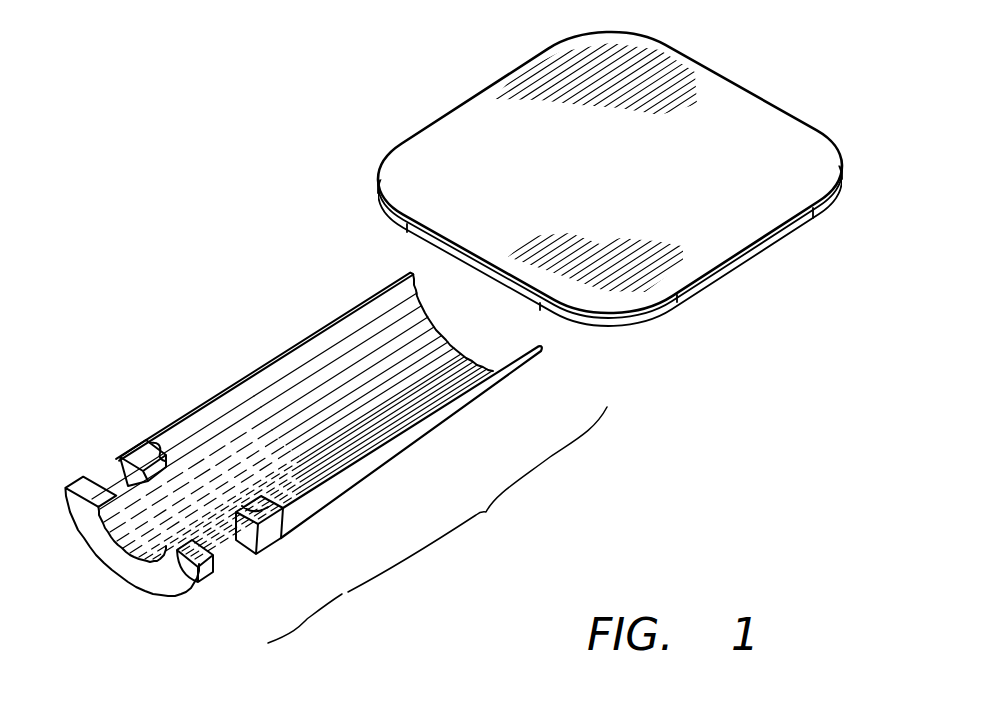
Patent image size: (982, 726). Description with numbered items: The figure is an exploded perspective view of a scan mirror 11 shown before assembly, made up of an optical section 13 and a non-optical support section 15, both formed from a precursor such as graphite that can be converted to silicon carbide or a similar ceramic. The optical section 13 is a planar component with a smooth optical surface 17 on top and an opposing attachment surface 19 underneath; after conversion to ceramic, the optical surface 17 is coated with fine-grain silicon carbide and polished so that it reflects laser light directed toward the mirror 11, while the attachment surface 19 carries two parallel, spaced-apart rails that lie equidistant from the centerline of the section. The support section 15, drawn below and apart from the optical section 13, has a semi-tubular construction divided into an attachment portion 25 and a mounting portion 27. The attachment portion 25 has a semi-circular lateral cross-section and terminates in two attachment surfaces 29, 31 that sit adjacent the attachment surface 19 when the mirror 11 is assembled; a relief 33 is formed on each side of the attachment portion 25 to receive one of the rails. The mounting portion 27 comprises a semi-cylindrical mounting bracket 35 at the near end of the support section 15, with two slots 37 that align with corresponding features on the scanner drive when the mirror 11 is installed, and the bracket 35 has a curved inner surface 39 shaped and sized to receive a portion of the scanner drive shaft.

The mirror 11 is at (157, 53).
The optical section 13 is at (468, 90).
The non-optical support section 15 is at (198, 394).
The optical surface 17 is at (700, 86).
The attachment surface 19 is at (798, 238).
The attachment portion 25 is at (477, 499).
The mounting portion 27 is at (305, 623).
The attachment surface 29 is at (300, 343).
The attachment surface 31 is at (442, 417).
The relief 33 is at (394, 284).
The semi-cylindrical mounting bracket 35 is at (140, 591).
The slot 37 is at (106, 473).
The inner surface of end cap 39 is at (144, 537).